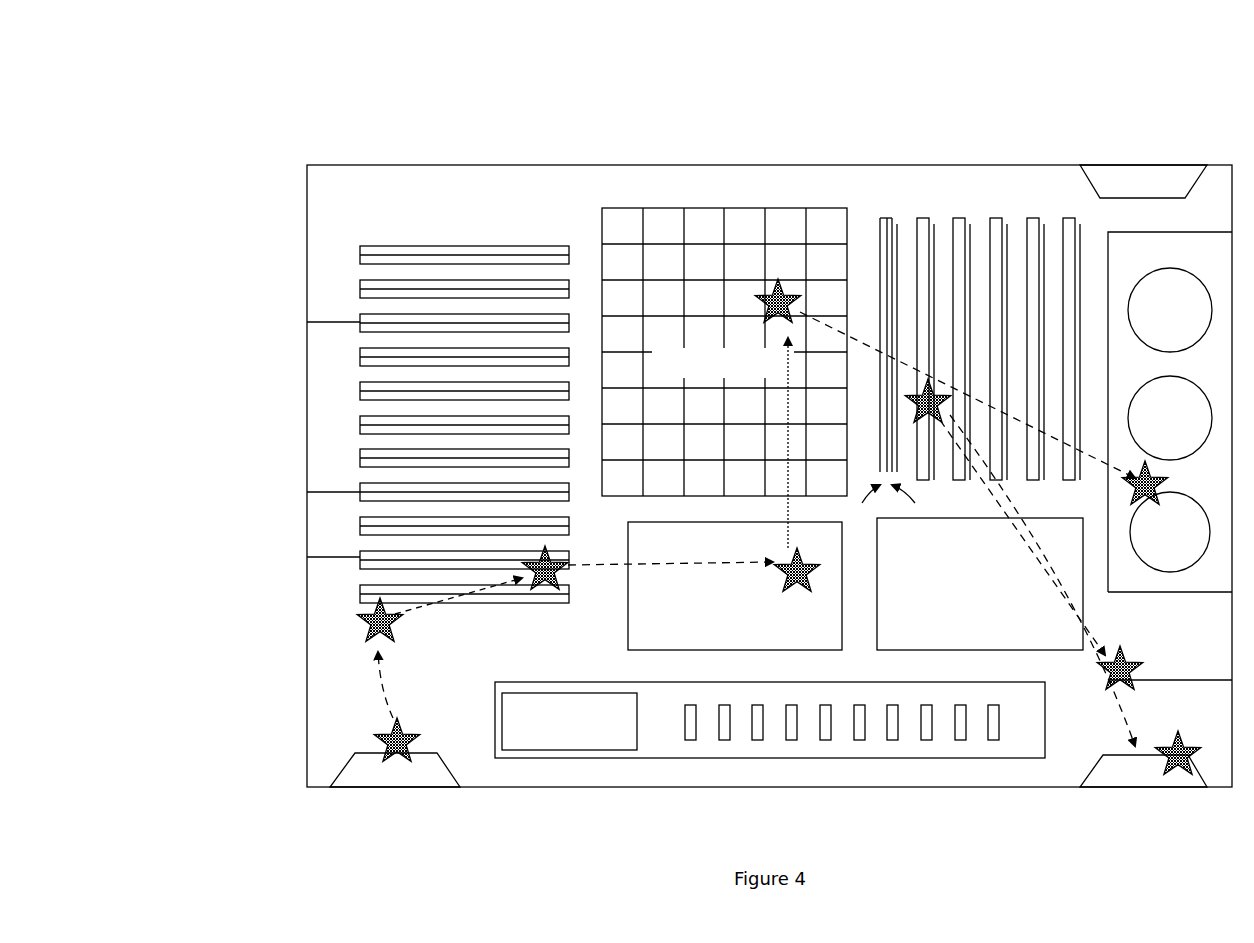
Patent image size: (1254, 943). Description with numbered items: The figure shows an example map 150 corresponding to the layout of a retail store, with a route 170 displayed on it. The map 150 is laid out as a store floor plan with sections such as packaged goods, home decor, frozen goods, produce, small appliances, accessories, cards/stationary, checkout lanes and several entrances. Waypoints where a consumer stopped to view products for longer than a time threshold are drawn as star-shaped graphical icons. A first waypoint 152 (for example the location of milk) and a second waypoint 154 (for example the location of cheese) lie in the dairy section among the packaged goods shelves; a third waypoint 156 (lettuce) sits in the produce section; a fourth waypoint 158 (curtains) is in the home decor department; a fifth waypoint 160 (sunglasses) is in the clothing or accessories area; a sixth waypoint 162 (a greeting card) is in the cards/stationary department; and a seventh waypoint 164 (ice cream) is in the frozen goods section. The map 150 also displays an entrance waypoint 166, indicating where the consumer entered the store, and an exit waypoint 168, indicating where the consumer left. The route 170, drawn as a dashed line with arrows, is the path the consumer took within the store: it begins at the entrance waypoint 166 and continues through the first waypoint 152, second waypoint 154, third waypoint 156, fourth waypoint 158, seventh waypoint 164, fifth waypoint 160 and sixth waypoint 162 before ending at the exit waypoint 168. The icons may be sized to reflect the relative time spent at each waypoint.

The map 150 is at (372, 165).
The first waypoint 152 is at (368, 627).
The second waypoint 154 is at (543, 565).
The third waypoint 156 is at (797, 566).
The fourth waypoint 158 is at (780, 300).
The fifth waypoint 160 is at (1143, 478).
The sixth waypoint 162 is at (1117, 666).
The seventh waypoint 164 is at (930, 400).
The entrance waypoint 166 is at (400, 740).
The exit waypoint 168 is at (1174, 750).
The route 170 is at (428, 605).